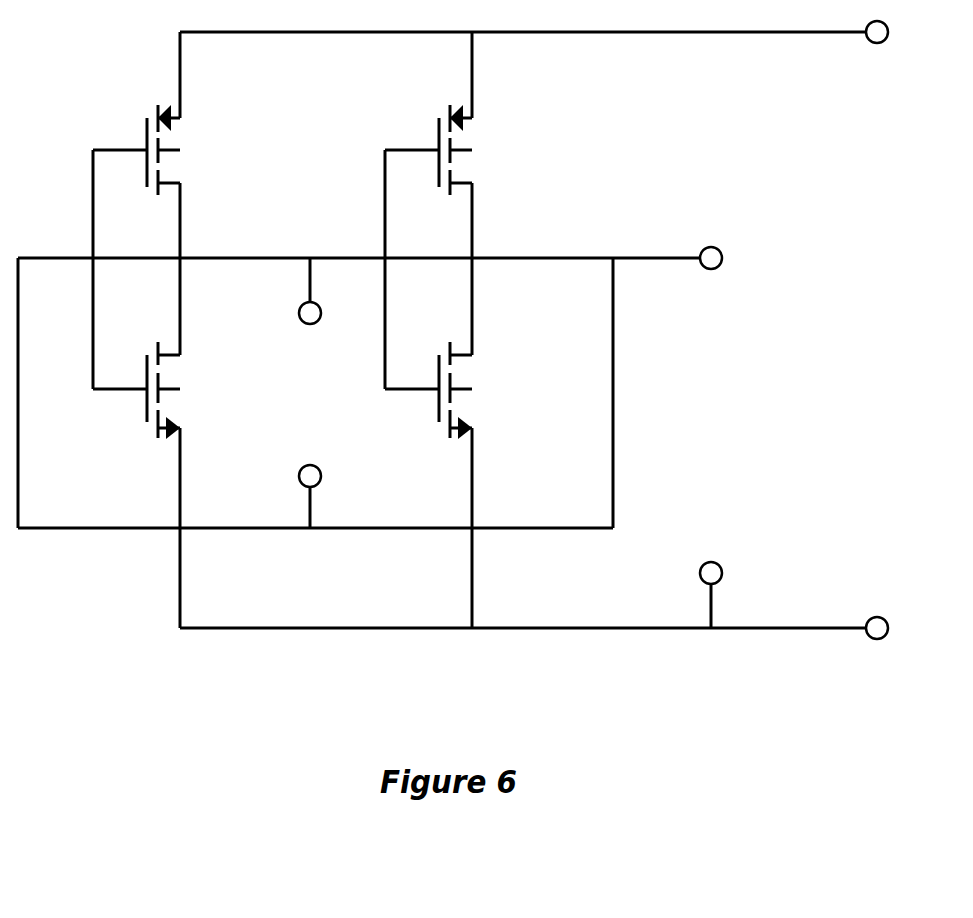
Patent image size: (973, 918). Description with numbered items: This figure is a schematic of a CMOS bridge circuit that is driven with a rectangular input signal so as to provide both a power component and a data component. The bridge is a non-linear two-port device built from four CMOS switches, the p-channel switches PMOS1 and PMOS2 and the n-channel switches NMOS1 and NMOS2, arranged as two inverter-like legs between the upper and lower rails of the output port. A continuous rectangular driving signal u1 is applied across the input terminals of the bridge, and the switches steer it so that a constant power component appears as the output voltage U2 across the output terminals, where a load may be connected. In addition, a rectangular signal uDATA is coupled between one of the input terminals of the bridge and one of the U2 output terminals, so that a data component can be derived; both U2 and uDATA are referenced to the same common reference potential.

The CMOS switch PMOS1 is at (201, 150).
The CMOS switch PMOS2 is at (493, 150).
The CMOS switch NMOS1 is at (191, 390).
The CMOS switch NMOS2 is at (485, 390).
The input voltage u1 is at (310, 346).
The rectangular signal output uDATA is at (711, 302).
The output voltage U2 is at (877, 62).